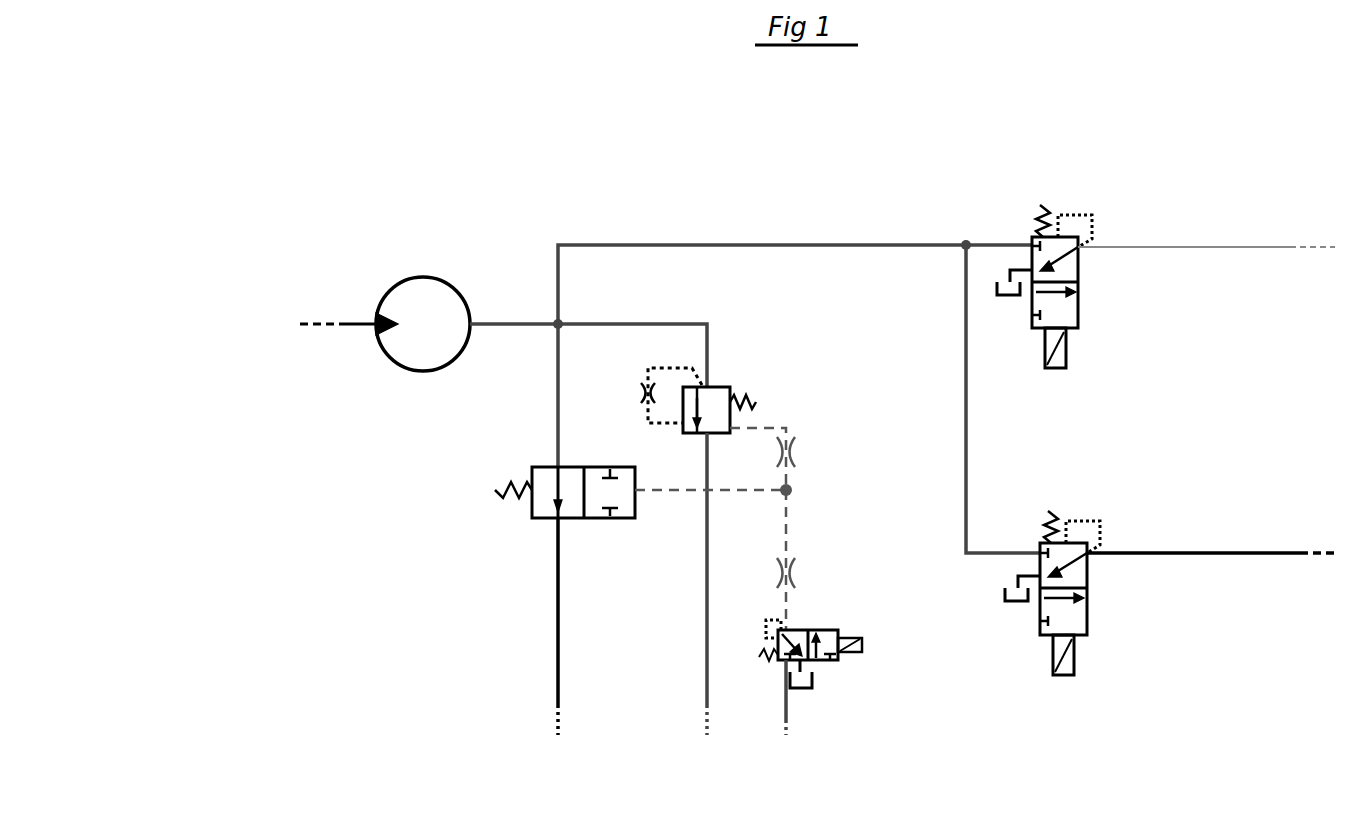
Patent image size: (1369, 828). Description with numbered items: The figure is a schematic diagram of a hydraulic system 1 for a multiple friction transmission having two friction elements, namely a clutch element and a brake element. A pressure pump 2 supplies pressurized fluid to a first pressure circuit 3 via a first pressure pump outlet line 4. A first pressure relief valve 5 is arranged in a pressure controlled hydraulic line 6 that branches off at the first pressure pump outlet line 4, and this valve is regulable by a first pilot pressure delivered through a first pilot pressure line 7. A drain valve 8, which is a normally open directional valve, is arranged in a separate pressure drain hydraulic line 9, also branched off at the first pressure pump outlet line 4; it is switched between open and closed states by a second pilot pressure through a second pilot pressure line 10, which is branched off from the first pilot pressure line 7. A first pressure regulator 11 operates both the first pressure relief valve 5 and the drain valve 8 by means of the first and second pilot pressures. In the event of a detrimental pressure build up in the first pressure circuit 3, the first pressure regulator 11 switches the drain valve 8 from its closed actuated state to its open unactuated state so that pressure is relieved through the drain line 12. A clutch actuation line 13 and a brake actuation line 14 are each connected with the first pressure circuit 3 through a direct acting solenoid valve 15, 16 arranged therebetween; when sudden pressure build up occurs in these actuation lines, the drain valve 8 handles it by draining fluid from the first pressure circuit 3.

The hydraulic system 1 is at (184, 167).
The pressure pump 2 is at (400, 268).
The first pressure circuit 3 is at (787, 242).
The first pressure pump outlet line 4 is at (497, 303).
The first pressure relief valve 5 is at (720, 378).
The pressure controlled hydraulic line 6 is at (680, 318).
The first pilot pressure line 7 is at (770, 432).
The drain valve 8 is at (525, 535).
The pressure drain hydraulic line 9 is at (560, 433).
The second pilot pressure line 10 is at (665, 502).
The first pressure regulator 11 is at (835, 680).
The drain line 12 is at (560, 635).
The clutch actuation line 13 is at (1245, 553).
The brake actuation line 14 is at (1235, 247).
The direct acting solenoid valve 15 is at (1097, 612).
The direct acting solenoid valve 16 is at (1090, 292).